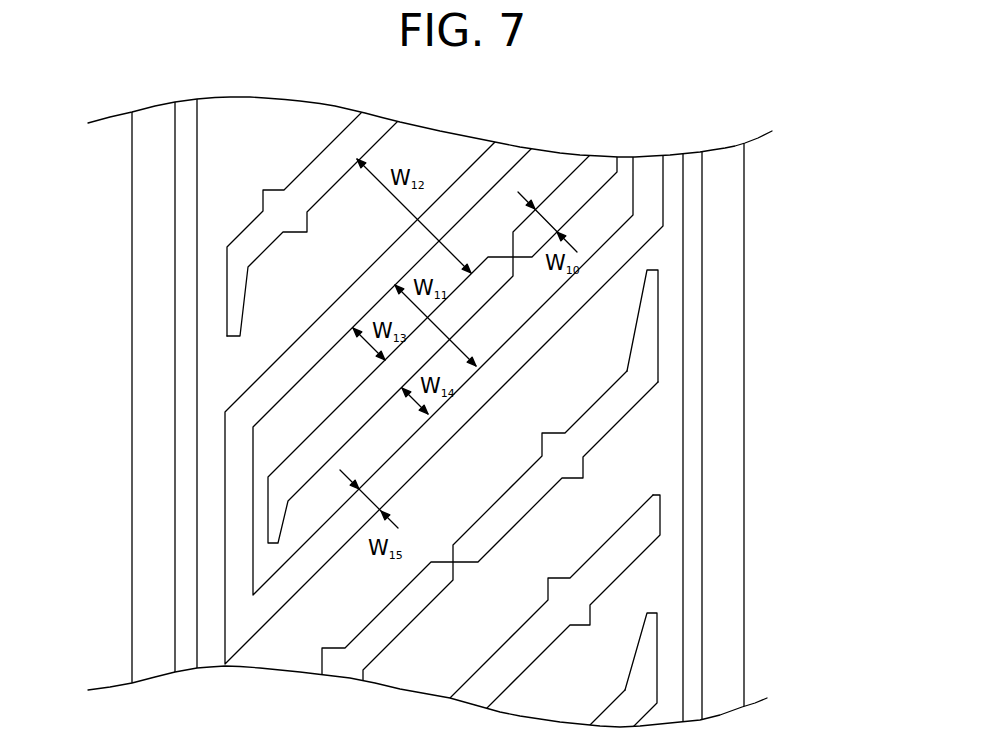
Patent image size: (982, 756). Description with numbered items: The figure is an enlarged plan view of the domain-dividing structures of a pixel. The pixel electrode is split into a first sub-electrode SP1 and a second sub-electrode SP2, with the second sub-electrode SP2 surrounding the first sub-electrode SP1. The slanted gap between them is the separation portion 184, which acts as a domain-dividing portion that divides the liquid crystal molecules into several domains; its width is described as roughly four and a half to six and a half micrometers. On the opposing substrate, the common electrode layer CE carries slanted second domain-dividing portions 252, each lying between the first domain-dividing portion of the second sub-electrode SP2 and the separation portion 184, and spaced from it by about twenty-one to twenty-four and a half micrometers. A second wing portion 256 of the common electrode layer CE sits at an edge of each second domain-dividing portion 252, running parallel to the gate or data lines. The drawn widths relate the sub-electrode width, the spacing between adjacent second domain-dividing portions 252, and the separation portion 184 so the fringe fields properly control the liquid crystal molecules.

The separation portion 184 is at (652, 226).
The second domain-dividing portion 252 is at (375, 127).
The second wing portion 256 is at (652, 326).
The first sub-electrode SP1 is at (622, 182).
The second sub-electrode SP2 is at (627, 472).
The common electrode layer CE is at (580, 362).